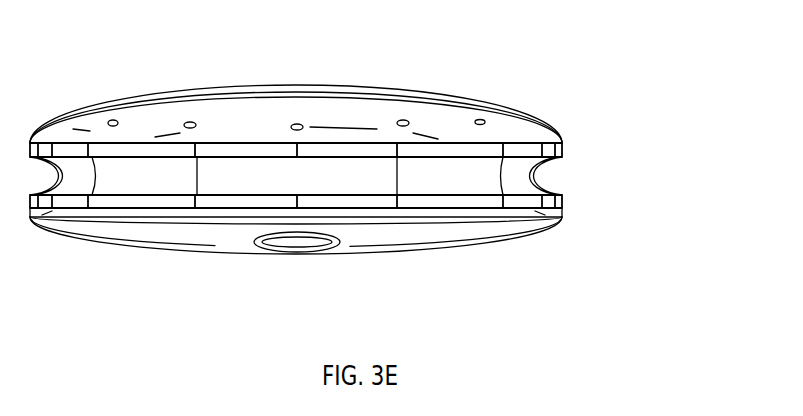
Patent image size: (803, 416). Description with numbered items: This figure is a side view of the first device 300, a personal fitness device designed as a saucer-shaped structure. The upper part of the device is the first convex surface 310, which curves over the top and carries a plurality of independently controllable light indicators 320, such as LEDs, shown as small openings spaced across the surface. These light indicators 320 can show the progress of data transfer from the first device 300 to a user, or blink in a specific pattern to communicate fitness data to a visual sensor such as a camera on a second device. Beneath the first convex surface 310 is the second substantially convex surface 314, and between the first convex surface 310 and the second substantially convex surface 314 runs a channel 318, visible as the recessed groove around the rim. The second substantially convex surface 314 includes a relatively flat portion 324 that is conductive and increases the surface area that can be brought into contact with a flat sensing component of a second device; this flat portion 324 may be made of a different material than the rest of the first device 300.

The first device 300 is at (371, 154).
The first convex surface 310 is at (433, 97).
The second substantially convex surface 314 is at (515, 228).
The channel 318 is at (545, 176).
The light indicators 320 is at (188, 122).
The relatively flat portion 324 is at (272, 255).